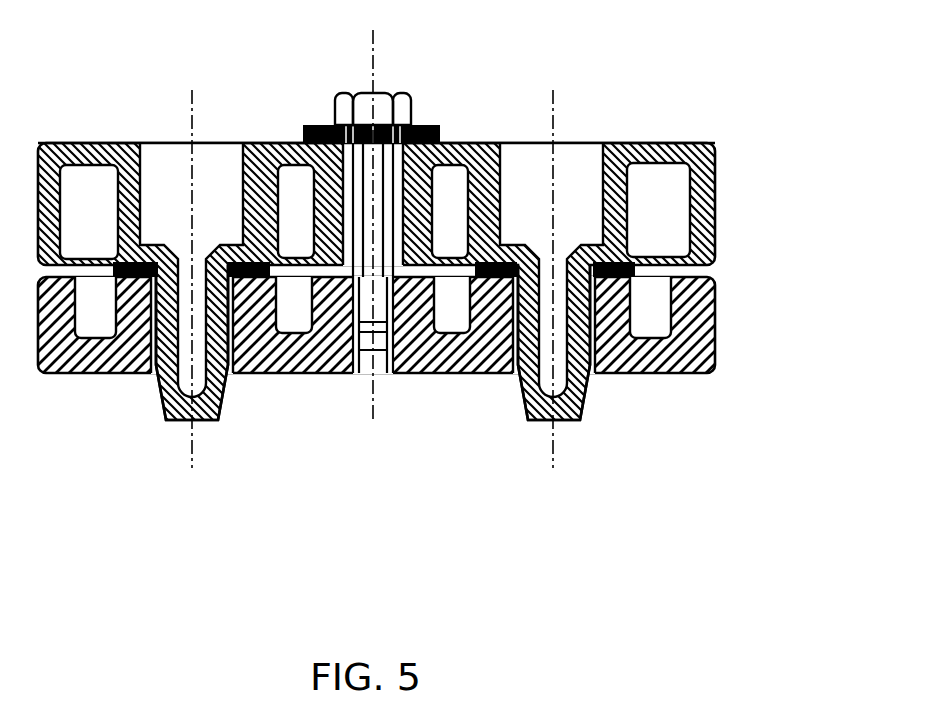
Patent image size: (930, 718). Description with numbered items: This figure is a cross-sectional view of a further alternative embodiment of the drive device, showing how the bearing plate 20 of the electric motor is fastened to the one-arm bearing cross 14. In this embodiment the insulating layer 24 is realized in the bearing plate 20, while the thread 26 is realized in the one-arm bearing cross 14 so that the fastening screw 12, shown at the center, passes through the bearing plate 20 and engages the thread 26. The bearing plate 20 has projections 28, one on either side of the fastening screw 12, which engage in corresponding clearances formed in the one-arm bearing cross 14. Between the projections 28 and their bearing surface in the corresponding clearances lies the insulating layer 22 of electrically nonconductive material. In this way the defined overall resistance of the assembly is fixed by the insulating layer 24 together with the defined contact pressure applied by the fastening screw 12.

The fastening screw 12 is at (387, 92).
The one-arm bearing cross 14 is at (713, 340).
The bearing plate 20 is at (717, 218).
The insulating layer 22 is at (113, 266).
The insulating layer 24 is at (300, 138).
The thread 26 is at (390, 374).
The projections 28 is at (182, 421).